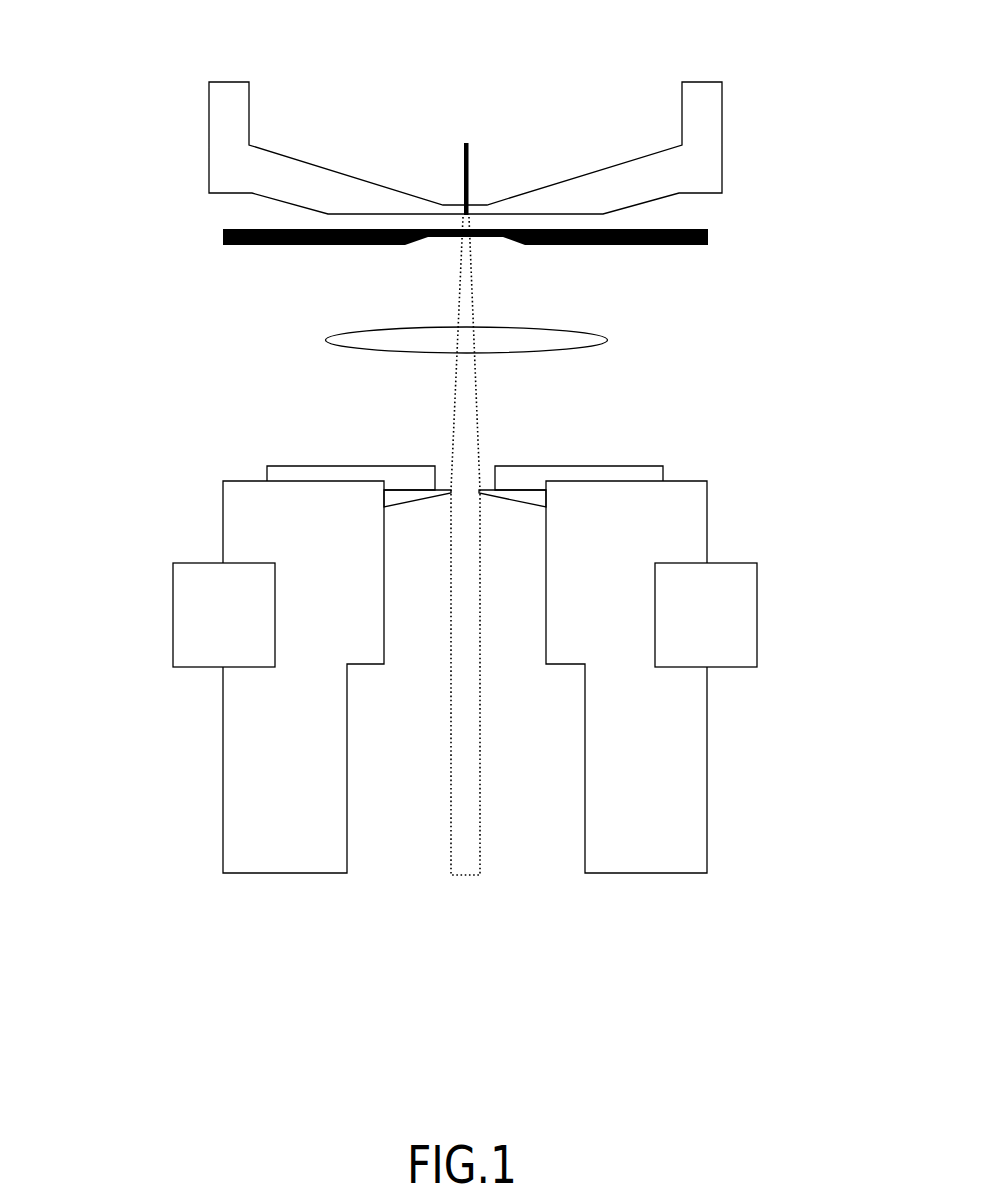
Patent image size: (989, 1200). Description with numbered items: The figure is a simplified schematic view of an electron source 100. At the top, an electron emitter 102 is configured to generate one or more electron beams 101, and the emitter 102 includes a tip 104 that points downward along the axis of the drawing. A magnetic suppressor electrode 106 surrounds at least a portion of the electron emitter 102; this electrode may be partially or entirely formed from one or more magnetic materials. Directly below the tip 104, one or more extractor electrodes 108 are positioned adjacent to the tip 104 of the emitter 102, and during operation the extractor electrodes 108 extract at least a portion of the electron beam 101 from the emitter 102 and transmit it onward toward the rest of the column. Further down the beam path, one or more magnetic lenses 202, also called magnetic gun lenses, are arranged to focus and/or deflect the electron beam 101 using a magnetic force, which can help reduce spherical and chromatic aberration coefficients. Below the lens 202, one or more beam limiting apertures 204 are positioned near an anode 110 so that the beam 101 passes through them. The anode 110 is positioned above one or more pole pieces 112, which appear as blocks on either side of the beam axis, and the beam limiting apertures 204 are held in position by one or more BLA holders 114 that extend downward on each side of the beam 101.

The electron source 100 is at (144, 45).
The electron beam 101 is at (457, 308).
The electron emitter 102 is at (460, 120).
The tip 104 is at (476, 238).
The magnetic suppressor electrode 106 is at (722, 137).
The extractor electrode 108 is at (708, 232).
The anode 110 is at (575, 466).
The pole piece 112 is at (173, 612).
The BLA holder 114 is at (223, 770).
The magnetic lens 202 is at (330, 341).
The beam limiting aperture 204 is at (447, 488).